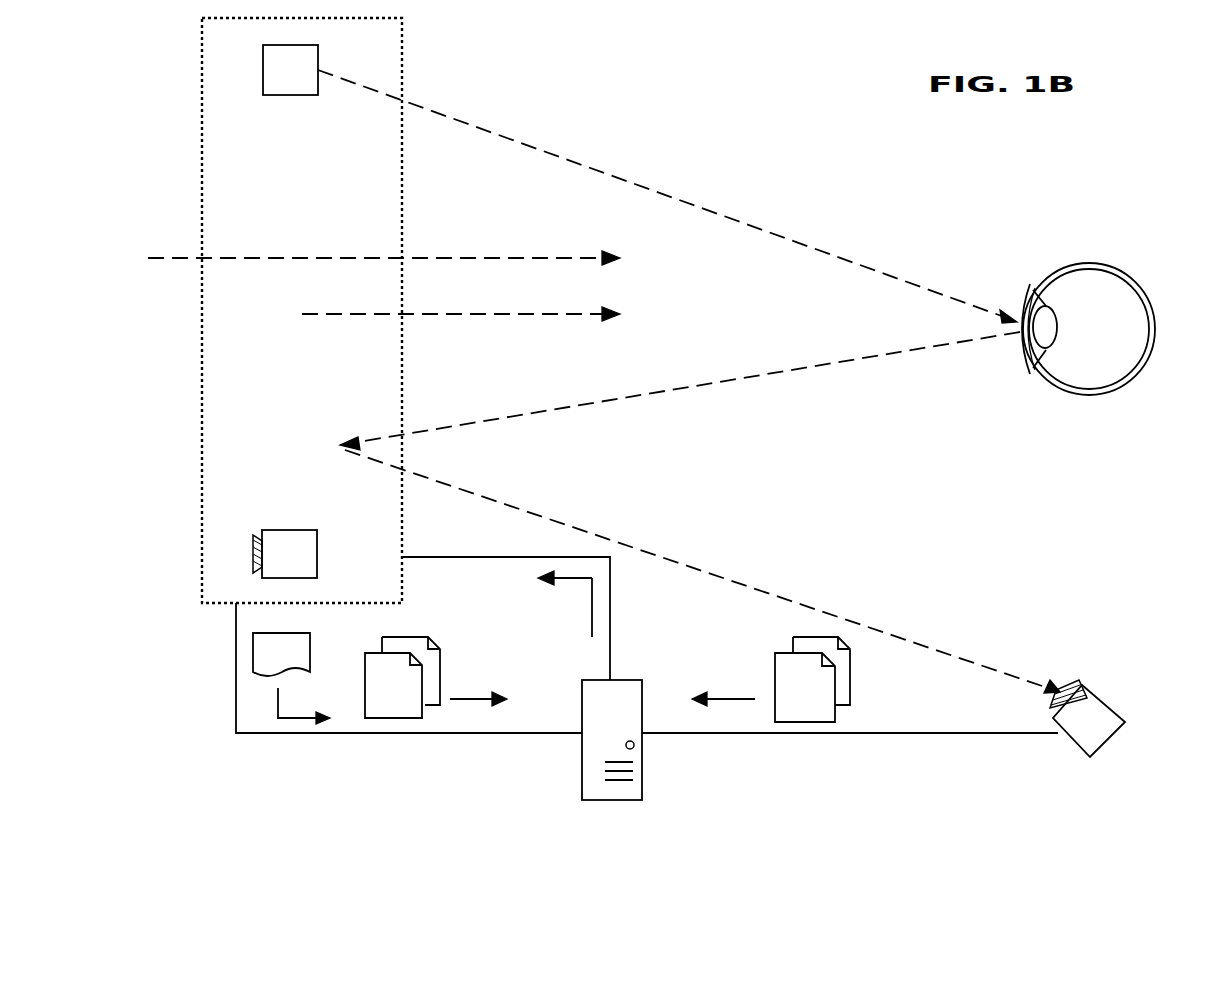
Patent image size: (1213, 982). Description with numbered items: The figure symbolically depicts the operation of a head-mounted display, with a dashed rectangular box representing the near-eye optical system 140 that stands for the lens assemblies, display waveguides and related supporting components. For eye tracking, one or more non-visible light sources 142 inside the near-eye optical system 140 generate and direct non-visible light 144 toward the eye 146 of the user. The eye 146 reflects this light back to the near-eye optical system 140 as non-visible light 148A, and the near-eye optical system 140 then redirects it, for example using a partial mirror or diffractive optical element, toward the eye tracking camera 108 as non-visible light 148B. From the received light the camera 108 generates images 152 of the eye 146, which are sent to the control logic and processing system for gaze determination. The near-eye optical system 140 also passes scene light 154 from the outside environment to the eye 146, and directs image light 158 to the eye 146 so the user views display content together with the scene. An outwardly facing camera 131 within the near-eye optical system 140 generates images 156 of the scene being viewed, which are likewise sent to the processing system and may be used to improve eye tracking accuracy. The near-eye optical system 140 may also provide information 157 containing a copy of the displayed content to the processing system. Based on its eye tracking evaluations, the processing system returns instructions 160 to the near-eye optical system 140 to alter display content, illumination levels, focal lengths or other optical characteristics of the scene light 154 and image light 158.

The near-eye optical system 140 is at (311, 366).
The non-visible light source 142 is at (290, 95).
The non-visible light 144 is at (675, 200).
The eye 146 is at (1093, 263).
The scene light 154 is at (450, 258).
The image light 158 is at (480, 314).
The non-visible light reflected to the near-eye optical system 148A is at (747, 377).
The non-visible light redirected to the camera 148B is at (760, 590).
The camera 131 is at (288, 530).
The instructions 160 is at (590, 605).
The information 157 is at (310, 652).
The images of the scene 156 is at (430, 647).
The images of the eye 152 is at (776, 680).
The eye tracking camera 108 is at (1098, 683).